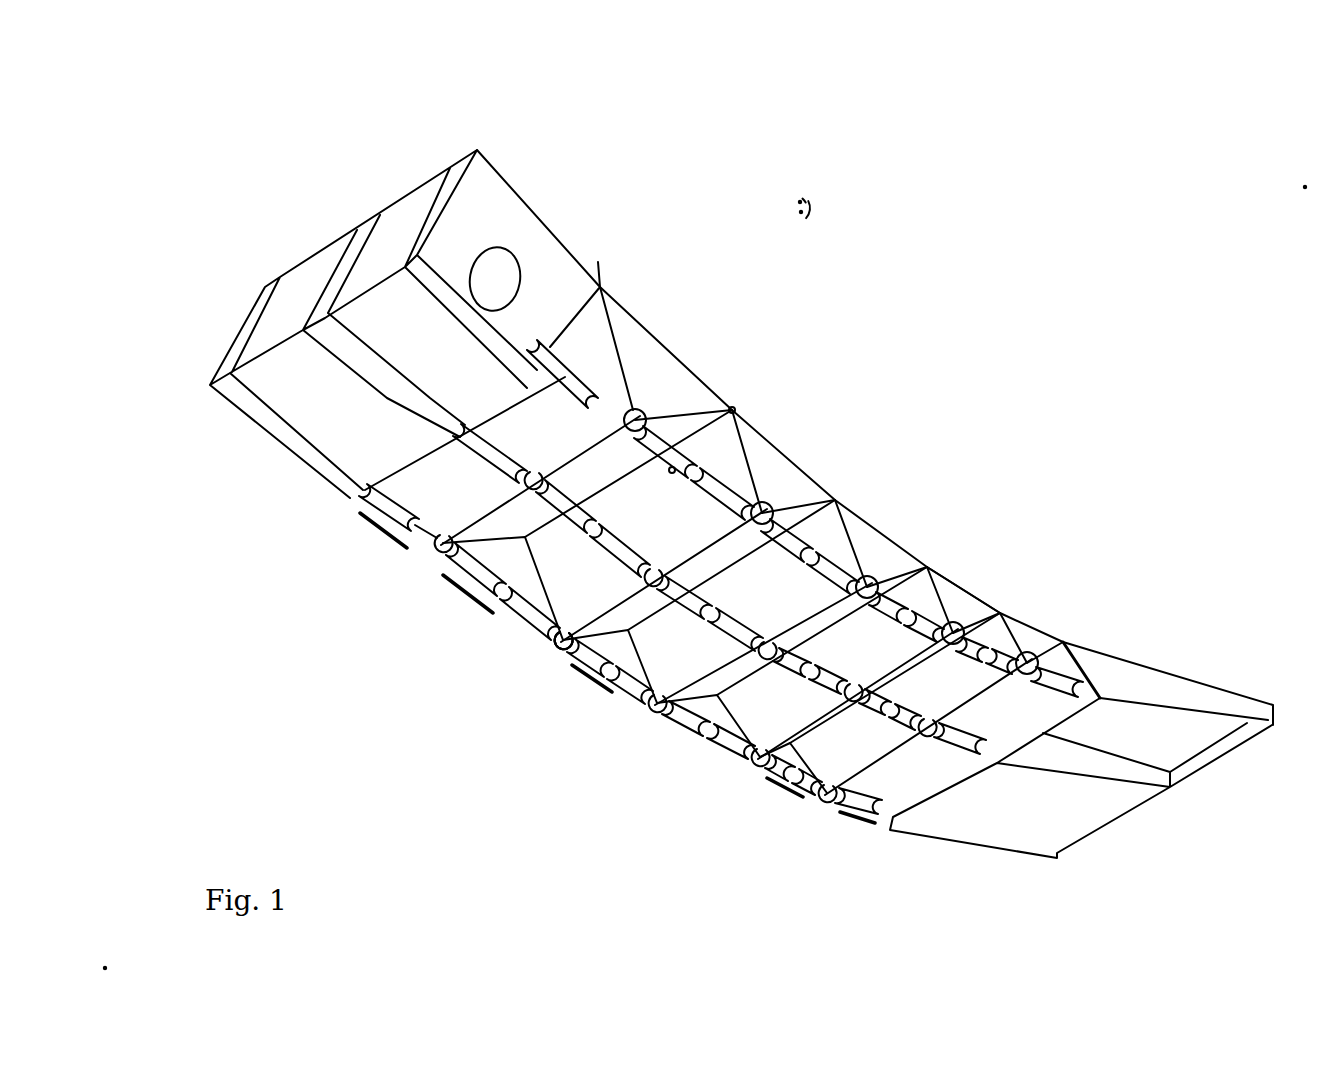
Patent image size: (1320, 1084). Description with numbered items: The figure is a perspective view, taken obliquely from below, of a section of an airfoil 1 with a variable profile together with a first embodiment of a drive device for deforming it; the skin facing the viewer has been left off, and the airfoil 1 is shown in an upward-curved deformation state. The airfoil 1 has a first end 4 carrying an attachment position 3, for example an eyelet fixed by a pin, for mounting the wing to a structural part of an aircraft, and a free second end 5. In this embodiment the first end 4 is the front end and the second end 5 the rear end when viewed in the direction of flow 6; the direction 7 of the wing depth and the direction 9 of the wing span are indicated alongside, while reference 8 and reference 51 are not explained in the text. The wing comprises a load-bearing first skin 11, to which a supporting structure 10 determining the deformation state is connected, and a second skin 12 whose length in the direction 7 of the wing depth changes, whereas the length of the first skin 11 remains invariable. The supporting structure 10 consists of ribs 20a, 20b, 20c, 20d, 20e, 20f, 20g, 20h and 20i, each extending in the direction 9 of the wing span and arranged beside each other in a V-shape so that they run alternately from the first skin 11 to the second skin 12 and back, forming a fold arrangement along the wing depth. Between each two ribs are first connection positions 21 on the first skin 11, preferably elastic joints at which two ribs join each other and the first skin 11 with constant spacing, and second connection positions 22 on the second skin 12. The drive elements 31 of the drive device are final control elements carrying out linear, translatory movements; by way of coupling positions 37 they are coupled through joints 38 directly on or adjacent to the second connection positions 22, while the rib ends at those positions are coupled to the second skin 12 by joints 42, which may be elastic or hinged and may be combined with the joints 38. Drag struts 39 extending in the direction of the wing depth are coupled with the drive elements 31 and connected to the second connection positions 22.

The airfoil 1 is at (1003, 462).
The attachment position 3 is at (278, 248).
The first end 4 is at (598, 262).
The second end 5 is at (1097, 630).
The direction of flow 6 is at (795, 208).
The direction of the wing depth 7 is at (722, 300).
The vertical direction 8 is at (795, 208).
The direction of the wing span 9 is at (795, 208).
The supporting structure 10 is at (392, 676).
The first skin 11 is at (968, 592).
The second skin 12 is at (517, 634).
The rib 20a is at (618, 345).
The rib 20b is at (683, 405).
The rib 20c is at (748, 462).
The rib 20d is at (803, 505).
The rib 20e is at (857, 540).
The rib 20f is at (903, 573).
The rib 20g is at (933, 585).
The rib 20h is at (990, 612).
The rib 20i is at (1017, 635).
The first connection position 21 is at (735, 408).
The second connection position 22 is at (418, 568).
The drive element 31 is at (710, 753).
The coupling position 37 is at (553, 655).
The joint 38 is at (500, 725).
The drag strut 39 is at (672, 472).
The joint 42 is at (526, 725).
The support plate 51 is at (1152, 685).